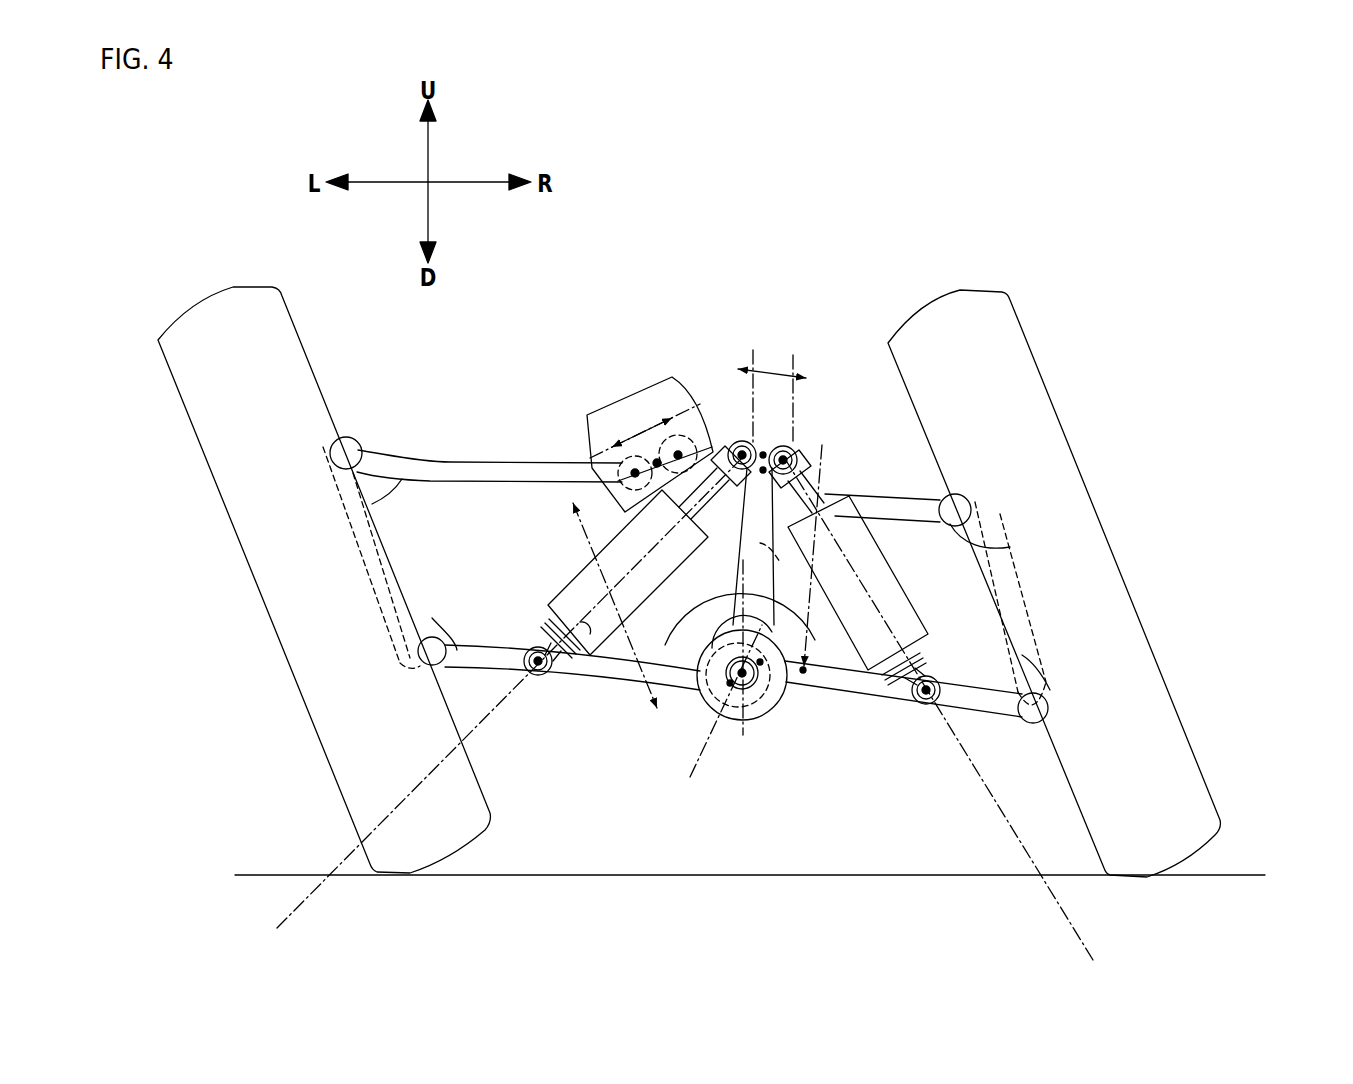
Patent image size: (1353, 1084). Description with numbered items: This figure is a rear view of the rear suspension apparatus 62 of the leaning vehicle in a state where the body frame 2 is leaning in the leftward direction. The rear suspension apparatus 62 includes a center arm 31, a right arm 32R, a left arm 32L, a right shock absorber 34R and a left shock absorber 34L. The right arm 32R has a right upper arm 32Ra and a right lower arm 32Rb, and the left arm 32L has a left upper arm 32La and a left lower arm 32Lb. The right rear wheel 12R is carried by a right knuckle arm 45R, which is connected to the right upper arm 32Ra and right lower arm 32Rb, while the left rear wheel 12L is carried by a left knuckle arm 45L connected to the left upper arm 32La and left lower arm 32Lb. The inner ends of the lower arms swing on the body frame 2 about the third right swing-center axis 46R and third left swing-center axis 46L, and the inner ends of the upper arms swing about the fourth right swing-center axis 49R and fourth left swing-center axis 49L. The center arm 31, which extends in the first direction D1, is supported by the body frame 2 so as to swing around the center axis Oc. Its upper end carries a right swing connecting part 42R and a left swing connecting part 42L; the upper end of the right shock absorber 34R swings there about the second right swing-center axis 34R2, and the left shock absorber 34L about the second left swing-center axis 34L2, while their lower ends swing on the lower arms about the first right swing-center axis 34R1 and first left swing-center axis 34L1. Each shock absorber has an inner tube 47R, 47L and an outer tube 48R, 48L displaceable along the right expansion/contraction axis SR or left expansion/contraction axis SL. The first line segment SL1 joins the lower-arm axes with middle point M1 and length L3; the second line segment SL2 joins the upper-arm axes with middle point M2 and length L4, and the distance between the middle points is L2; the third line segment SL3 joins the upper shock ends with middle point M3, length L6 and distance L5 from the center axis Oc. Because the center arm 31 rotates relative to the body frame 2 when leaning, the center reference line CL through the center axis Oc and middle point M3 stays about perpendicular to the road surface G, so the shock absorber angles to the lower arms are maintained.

The body frame 2 is at (600, 412).
The left rear wheel 12L is at (207, 303).
The right rear wheel 12R is at (978, 290).
The center arm 31 is at (568, 470).
The left arm 32L is at (271, 552).
The left upper arm 32La is at (402, 479).
The left lower arm 32Lb is at (432, 618).
The right arm 32R is at (1128, 607).
The right upper arm 32Ra is at (975, 503).
The right lower arm 32Rb is at (1022, 695).
The left shock absorber 34L is at (597, 517).
The first left swing-center axis 34L1 is at (540, 676).
The second left swing-center axis 34L2 is at (735, 450).
The right shock absorber 34R is at (886, 574).
The first right swing-center axis 34R1 is at (928, 706).
The second right swing-center axis 34R2 is at (795, 452).
The left swing connecting part 42L is at (732, 440).
The right swing connecting part 42R is at (793, 455).
The left knuckle arm 45L is at (332, 470).
The right knuckle arm 45R is at (997, 514).
The third left swing-center axis 46L is at (710, 712).
The third right swing-center axis 46R is at (788, 702).
The inner tube 47L is at (690, 455).
The inner tube 47R is at (826, 492).
The outer tube 48L is at (555, 598).
The outer tube 48R is at (918, 608).
The fourth left swing-center axis 49L is at (620, 460).
The fourth right swing-center axis 49R is at (762, 545).
The rear suspension apparatus 62 is at (690, 270).
The center axis Oc is at (745, 690).
The middle point M1 is at (785, 821).
The middle point M2 is at (652, 458).
The middle point M3 is at (785, 440).
The left expansion/contraction axis SL is at (288, 905).
The right expansion/contraction axis SR is at (1095, 922).
The first line segment SL1 is at (760, 690).
The second line segment SL2 is at (610, 425).
The third line segment SL3 is at (758, 440).
The center reference line CL is at (690, 780).
The second distance L2 is at (650, 700).
The third distance L3 is at (757, 628).
The fourth distance L4 is at (612, 422).
The fifth distance L5 is at (819, 559).
The sixth distance L6 is at (784, 395).
The first direction D1 is at (682, 627).
The road surface G is at (1232, 873).